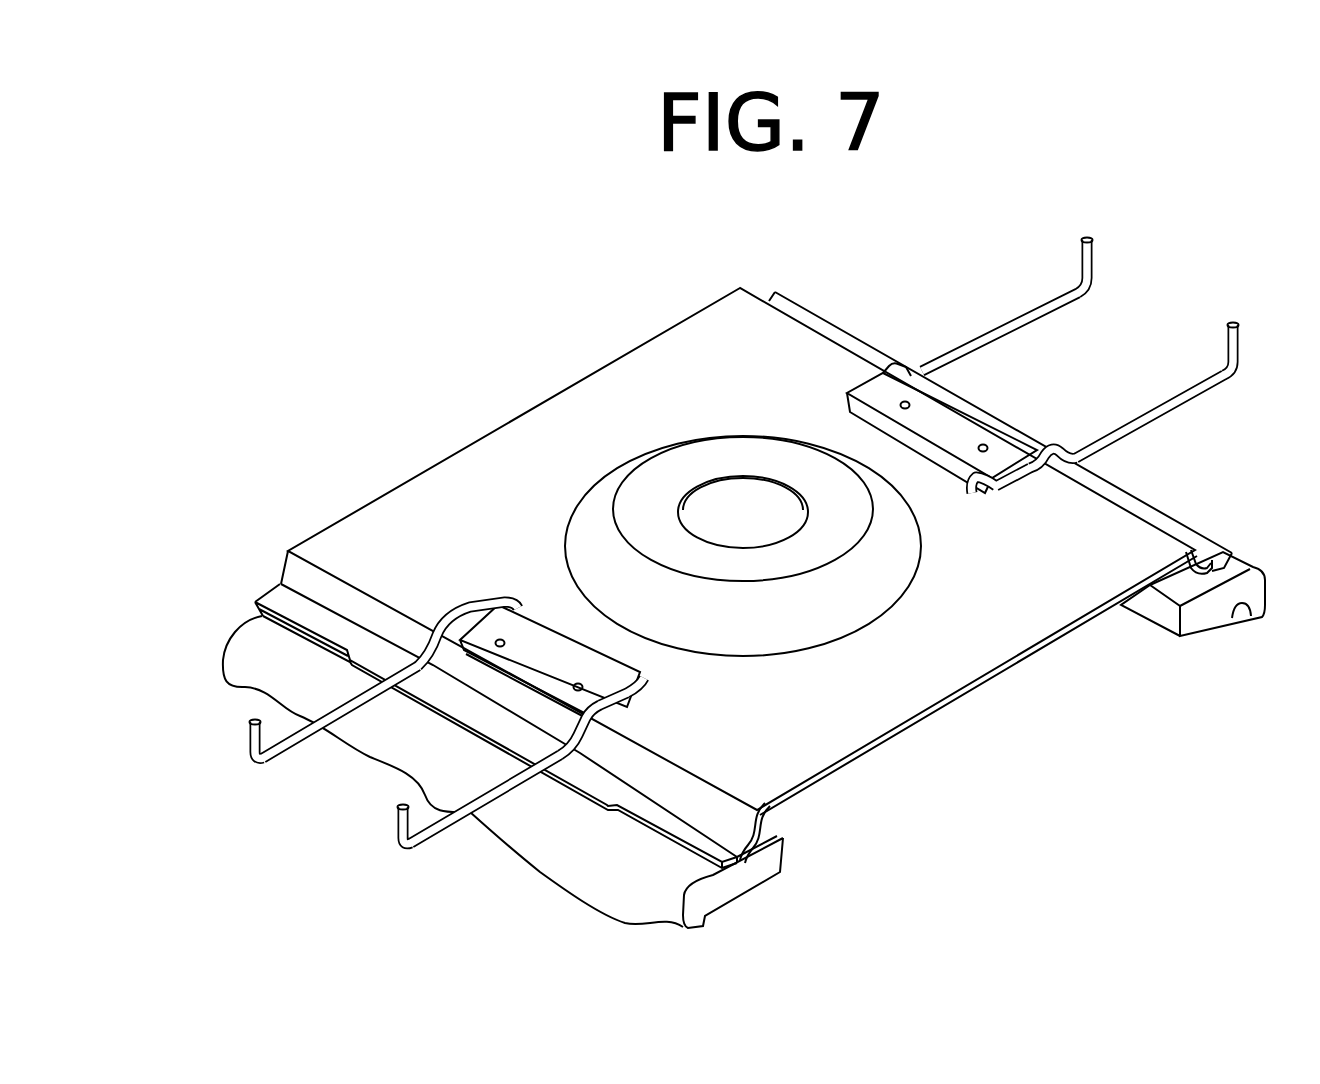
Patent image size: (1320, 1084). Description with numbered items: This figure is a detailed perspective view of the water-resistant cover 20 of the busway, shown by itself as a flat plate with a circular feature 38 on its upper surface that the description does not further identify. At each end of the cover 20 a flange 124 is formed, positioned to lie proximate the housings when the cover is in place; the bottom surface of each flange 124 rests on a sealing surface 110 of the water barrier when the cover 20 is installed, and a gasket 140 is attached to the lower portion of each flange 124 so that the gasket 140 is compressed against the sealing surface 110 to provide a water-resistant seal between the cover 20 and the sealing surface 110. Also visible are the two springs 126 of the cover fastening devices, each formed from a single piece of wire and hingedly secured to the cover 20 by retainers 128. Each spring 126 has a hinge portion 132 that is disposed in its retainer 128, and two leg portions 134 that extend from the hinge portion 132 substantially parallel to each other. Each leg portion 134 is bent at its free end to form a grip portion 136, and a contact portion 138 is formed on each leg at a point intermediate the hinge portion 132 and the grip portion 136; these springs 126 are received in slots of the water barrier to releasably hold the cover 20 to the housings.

The water-resistant cover 20 is at (630, 283).
The spindle motor hub 38 is at (683, 425).
The sealing surface 110 is at (778, 832).
The flange 124 is at (283, 597).
The spring 126 is at (722, 587).
The retainer 128 is at (521, 608).
The hinge portion 132 is at (987, 483).
The leg portion 134 is at (1015, 317).
The grip portion 136 is at (1093, 250).
The contact portion 138 is at (935, 385).
The gasket 140 is at (750, 865).